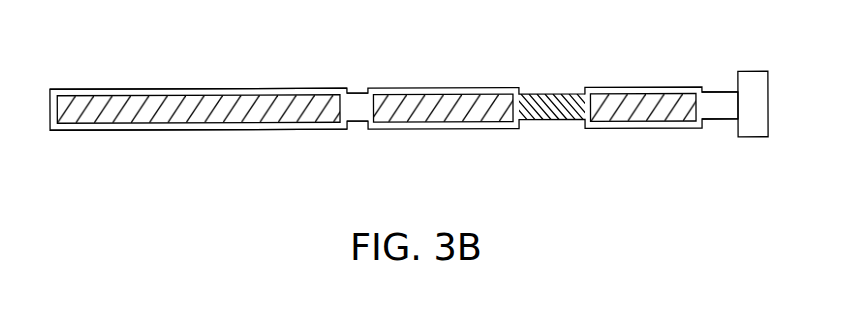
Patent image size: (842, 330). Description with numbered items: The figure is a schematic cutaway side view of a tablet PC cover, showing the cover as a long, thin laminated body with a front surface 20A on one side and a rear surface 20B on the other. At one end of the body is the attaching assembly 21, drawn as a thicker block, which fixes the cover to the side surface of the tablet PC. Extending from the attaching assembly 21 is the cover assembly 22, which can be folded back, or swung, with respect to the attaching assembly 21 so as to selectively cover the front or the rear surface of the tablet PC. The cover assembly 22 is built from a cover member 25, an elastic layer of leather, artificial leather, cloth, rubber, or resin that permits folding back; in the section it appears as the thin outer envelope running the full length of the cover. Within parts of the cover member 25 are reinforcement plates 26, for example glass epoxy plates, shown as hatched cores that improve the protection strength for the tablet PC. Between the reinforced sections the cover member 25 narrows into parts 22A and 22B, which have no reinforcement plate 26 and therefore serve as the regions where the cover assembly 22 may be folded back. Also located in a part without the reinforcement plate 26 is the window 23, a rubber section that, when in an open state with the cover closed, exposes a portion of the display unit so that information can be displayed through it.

The front surface 20A is at (98, 140).
The rear surface 20B is at (98, 77).
The attaching assembly 21 is at (755, 83).
The cover assembly 22 is at (394, 111).
The part without reinforcement plate 22A is at (360, 87).
The part without reinforcement plate 22B is at (707, 85).
The window 23 is at (552, 95).
The cover member 25 is at (497, 90).
The reinforcement plate 26 is at (200, 100).